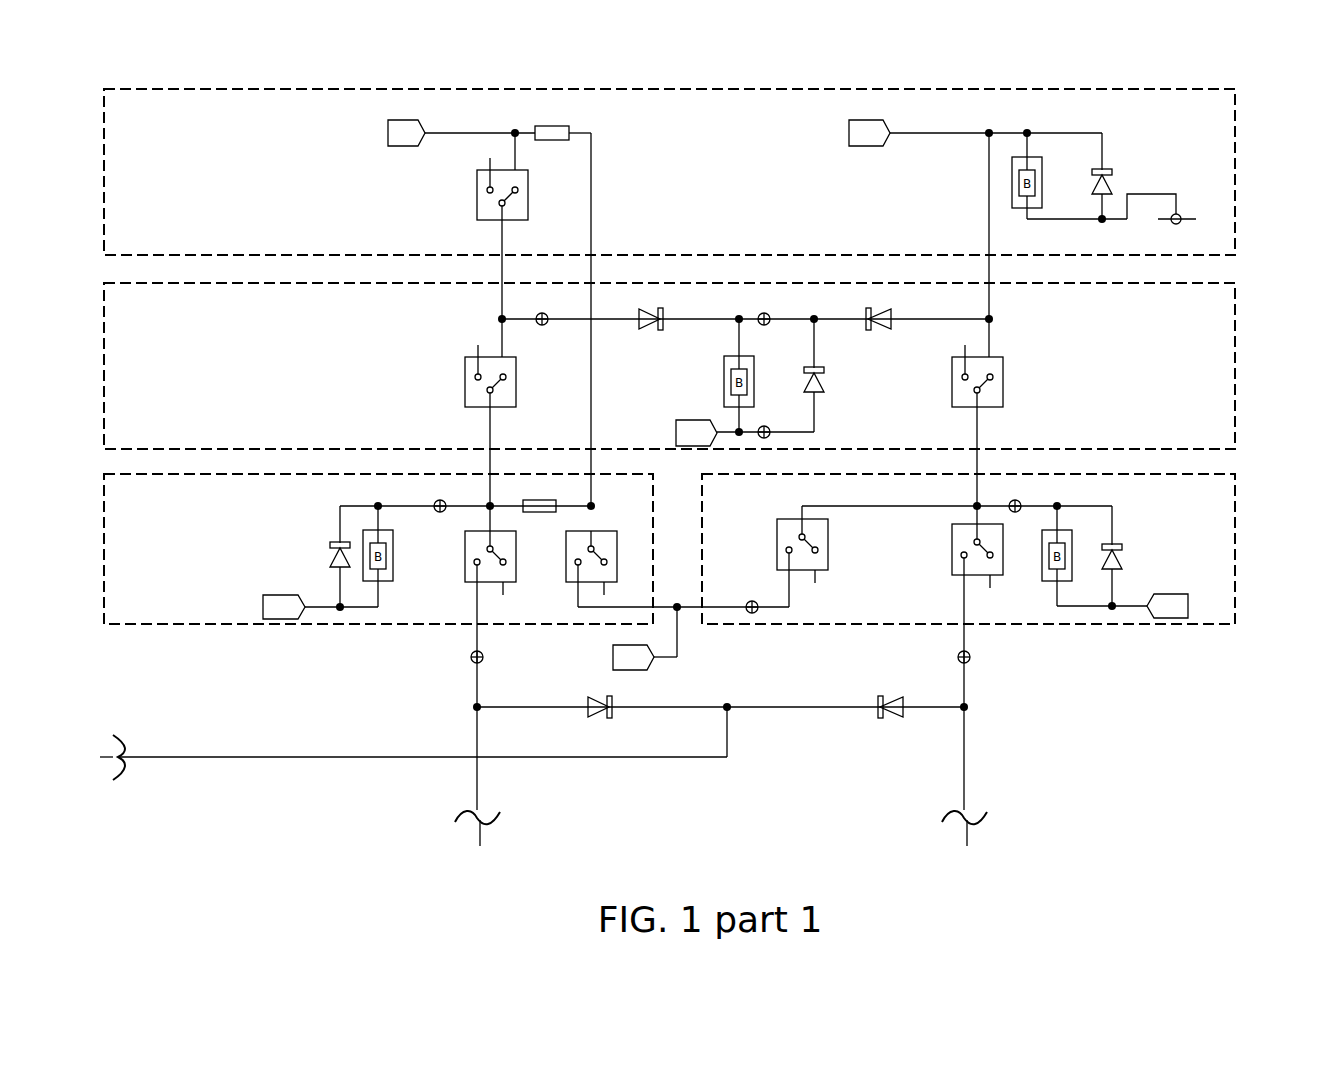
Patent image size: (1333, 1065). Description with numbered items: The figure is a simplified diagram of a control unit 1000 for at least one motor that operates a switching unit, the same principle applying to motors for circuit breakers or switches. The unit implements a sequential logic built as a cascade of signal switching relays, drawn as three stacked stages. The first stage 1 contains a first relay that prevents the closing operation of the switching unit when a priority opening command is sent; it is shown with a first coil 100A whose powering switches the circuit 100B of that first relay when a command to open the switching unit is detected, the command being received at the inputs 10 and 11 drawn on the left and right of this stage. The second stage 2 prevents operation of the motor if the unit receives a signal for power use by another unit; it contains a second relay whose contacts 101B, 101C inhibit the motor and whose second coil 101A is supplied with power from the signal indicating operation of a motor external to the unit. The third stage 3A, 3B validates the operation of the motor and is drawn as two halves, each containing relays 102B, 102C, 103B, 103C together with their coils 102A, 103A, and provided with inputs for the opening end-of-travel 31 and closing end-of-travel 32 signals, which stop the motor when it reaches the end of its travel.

The control unit 1000 is at (1268, 108).
The first stage 1 is at (106, 201).
The second stage 2 is at (106, 372).
The third stage 3A is at (106, 556).
The third stage 3B is at (1233, 495).
The switch close input SWCC_DI 10 is at (405, 120).
The switch open input SWOC_DI 11 is at (853, 120).
The first coil 100A is at (1012, 183).
The circuit of the first relay 100B is at (528, 197).
The second coil 101A is at (726, 378).
The second relay 101B is at (467, 380).
The second relay 101C is at (1002, 383).
The relay U102 coil 102A is at (392, 565).
The relay 102B is at (465, 563).
The relay 102C is at (617, 565).
The relay U103 coil 103A is at (1070, 585).
The relay 103B is at (951, 548).
The relay 103C is at (828, 532).
The opening end-of-travel input 31 is at (1170, 619).
The closing end-of-travel input 32 is at (283, 595).